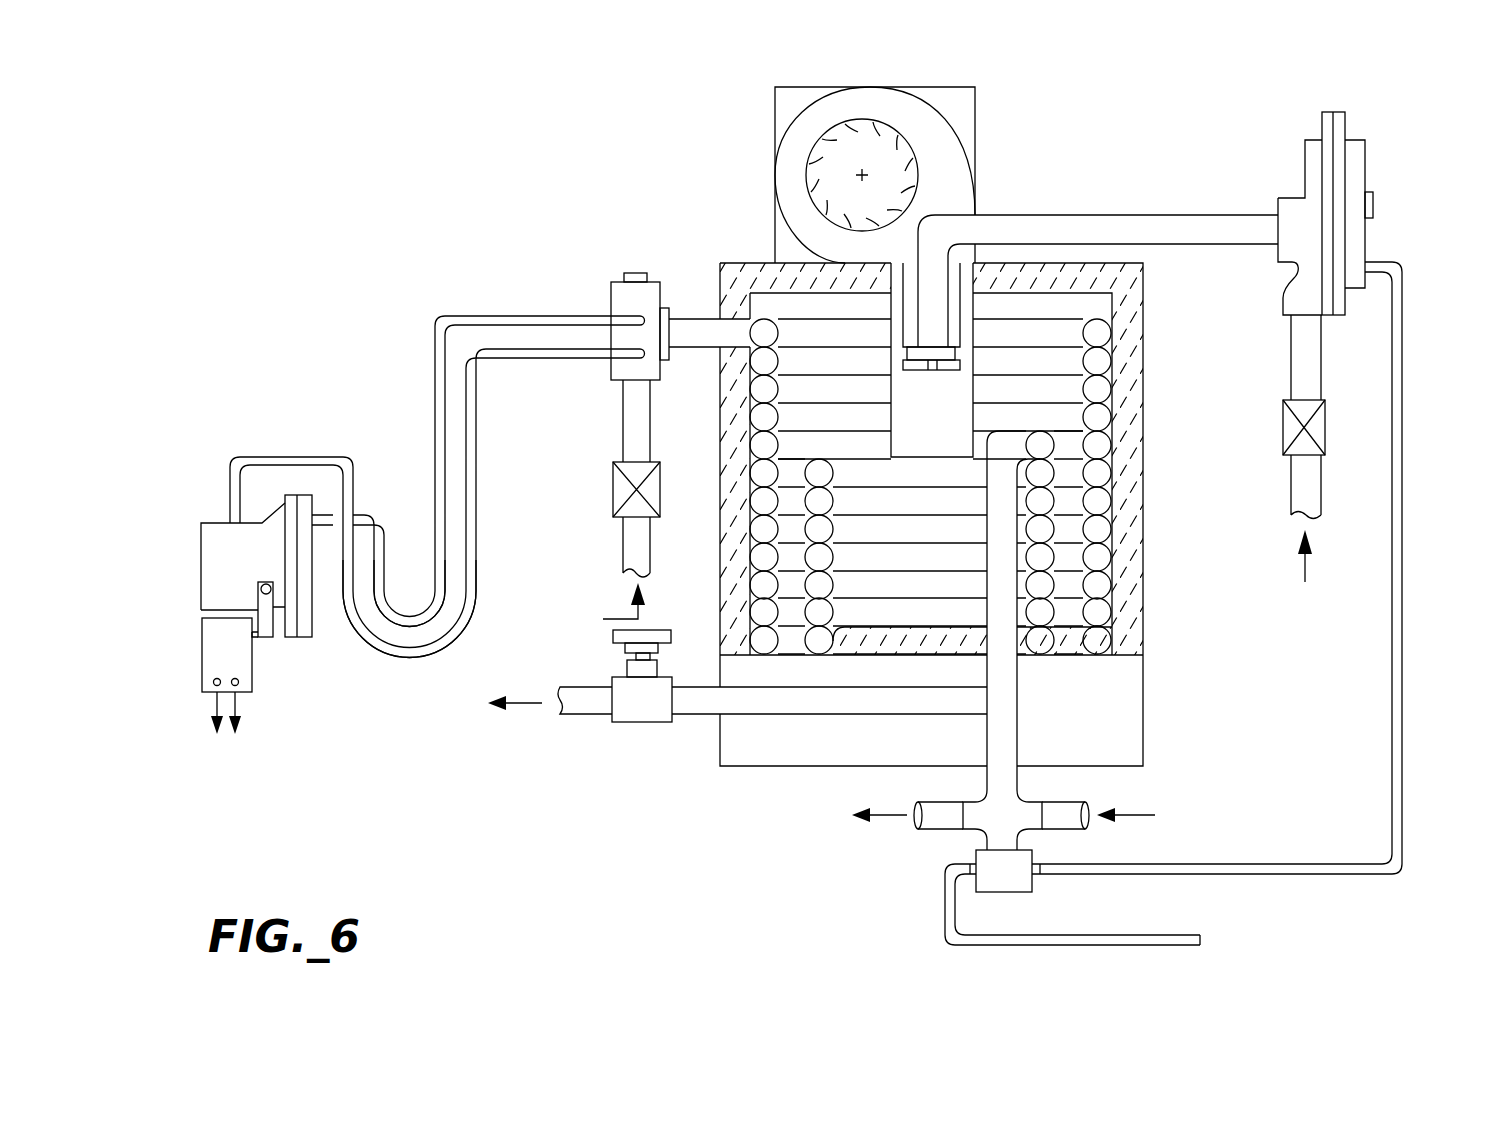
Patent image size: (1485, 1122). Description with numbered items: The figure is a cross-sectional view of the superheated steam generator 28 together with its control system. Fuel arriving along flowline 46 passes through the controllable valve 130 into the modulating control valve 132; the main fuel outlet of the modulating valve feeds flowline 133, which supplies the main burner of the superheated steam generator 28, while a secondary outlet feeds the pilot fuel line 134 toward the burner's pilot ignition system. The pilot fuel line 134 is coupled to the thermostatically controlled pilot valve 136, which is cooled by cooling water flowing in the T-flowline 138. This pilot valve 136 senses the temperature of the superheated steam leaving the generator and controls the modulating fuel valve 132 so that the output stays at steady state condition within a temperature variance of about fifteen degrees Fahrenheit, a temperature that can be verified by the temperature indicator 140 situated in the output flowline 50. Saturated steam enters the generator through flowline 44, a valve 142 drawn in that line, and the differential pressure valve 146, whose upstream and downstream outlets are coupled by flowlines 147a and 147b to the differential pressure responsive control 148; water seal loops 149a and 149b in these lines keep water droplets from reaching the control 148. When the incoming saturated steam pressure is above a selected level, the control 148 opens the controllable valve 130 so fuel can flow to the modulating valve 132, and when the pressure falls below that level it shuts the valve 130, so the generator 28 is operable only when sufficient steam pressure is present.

The superheated steam generator 28 is at (720, 204).
The flowline 44 is at (633, 540).
The flowline 46 is at (1301, 478).
The flowline 50 is at (578, 707).
The controllable valve 130 is at (1283, 418).
The modulating control valve 132 is at (1367, 155).
The flowline 133 is at (1150, 222).
The pilot fuel line 134 is at (1403, 313).
The thermostatically controlled pilot valve 136 is at (1015, 880).
The T-flowline 138 is at (1000, 817).
The temperature indicator 140 is at (636, 707).
The saturated steam valve 142 is at (612, 478).
The differential pressure valve 146 is at (619, 281).
The flowline 147a is at (500, 360).
The flowline 147b is at (500, 313).
The differential pressure responsive control 148 is at (220, 522).
The water seal loop 149a is at (432, 660).
The water seal loop 149b is at (366, 655).